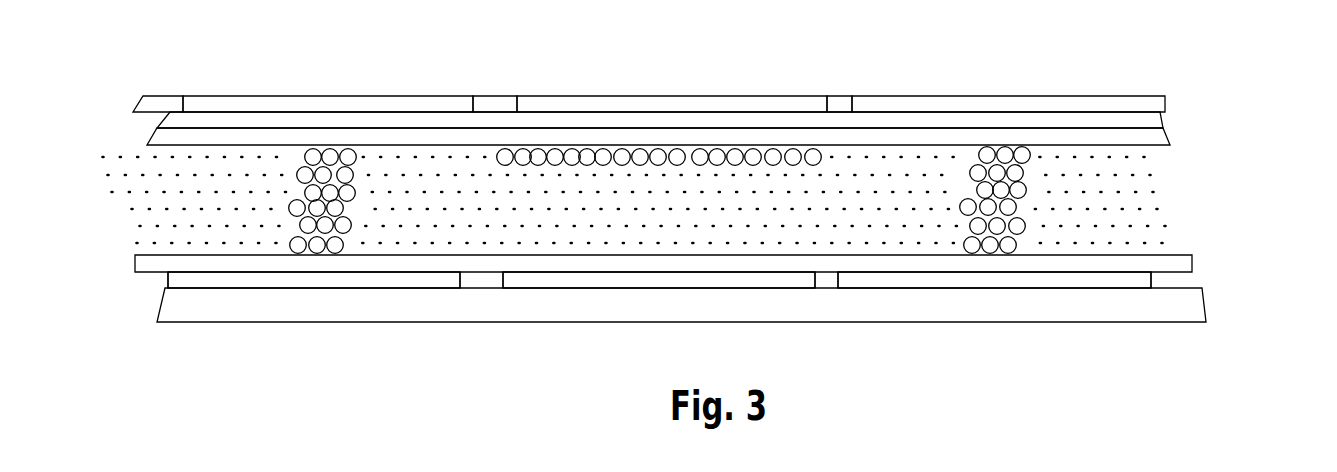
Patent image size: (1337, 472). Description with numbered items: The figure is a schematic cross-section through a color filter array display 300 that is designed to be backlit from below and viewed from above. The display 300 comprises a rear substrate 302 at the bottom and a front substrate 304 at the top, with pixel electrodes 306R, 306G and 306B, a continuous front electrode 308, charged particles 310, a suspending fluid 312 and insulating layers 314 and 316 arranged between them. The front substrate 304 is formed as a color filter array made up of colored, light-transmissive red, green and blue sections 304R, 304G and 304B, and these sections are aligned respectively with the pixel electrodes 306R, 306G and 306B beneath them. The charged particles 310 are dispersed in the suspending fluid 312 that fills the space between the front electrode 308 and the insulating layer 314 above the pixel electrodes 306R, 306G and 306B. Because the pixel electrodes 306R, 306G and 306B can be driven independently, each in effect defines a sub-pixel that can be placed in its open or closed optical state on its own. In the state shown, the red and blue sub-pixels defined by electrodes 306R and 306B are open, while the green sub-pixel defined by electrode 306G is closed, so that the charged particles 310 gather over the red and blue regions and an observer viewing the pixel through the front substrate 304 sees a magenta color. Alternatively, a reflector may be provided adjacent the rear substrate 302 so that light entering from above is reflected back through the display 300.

The color filter array display 300 is at (1197, 196).
The rear substrate 302 is at (1172, 306).
The front substrate 304 is at (840, 102).
The red section 304R is at (330, 105).
The green section 304G is at (670, 103).
The blue section 304B is at (1008, 105).
The pixel electrode 306R is at (313, 279).
The pixel electrode 306G is at (657, 280).
The pixel electrode 306B is at (995, 280).
The top electrode layer 308 is at (543, 119).
The charged particles 310 is at (1017, 177).
The suspending fluid 312 is at (410, 157).
The insulating layer 314 is at (155, 265).
The insulating layer 316 is at (163, 140).